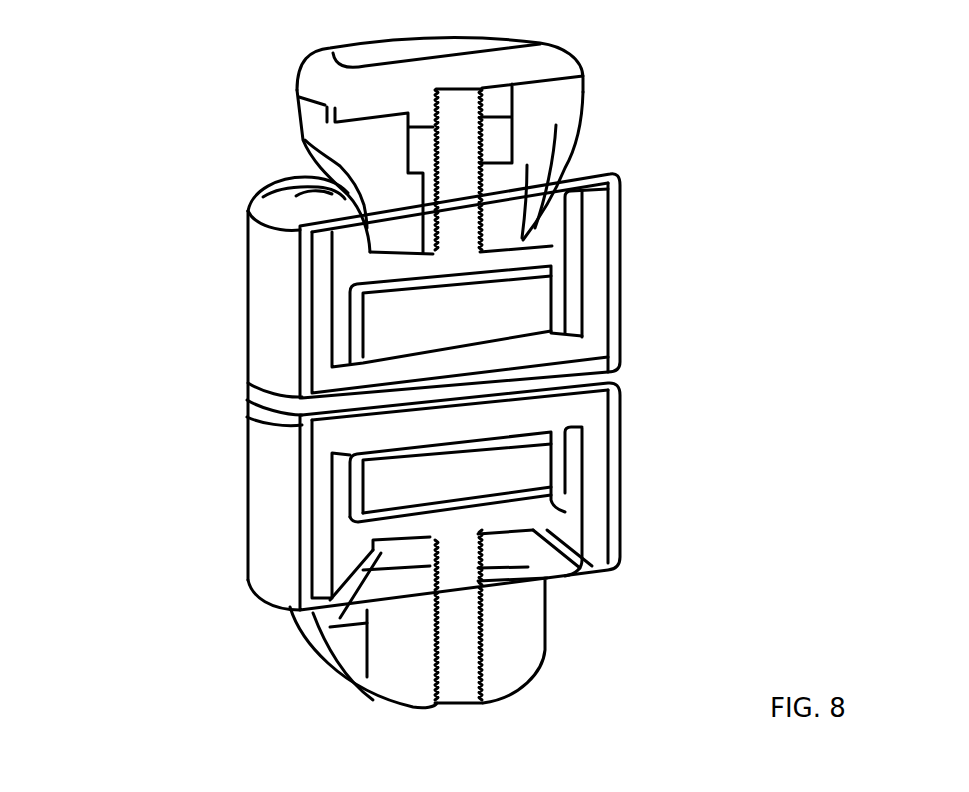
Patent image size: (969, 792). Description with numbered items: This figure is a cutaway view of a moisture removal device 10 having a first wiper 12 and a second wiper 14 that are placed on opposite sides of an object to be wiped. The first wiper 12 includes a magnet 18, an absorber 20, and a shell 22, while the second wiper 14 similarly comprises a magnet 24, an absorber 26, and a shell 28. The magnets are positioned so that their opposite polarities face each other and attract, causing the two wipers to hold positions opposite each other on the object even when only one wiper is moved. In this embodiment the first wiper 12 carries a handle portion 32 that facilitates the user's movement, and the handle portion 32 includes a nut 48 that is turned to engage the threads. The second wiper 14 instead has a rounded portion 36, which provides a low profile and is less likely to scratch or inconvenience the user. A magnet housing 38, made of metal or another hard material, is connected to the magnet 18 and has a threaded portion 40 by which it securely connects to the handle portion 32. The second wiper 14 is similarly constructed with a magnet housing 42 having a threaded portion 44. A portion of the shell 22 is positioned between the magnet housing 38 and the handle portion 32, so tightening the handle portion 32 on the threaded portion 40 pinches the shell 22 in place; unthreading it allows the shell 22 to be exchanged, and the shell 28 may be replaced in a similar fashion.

The moisture removal device 10 is at (194, 229).
The first wiper 12 is at (217, 315).
The second wiper 14 is at (213, 537).
The magnet 18 is at (510, 300).
The absorber 20 is at (593, 307).
The shell 22 is at (617, 343).
The magnet 24 is at (500, 475).
The absorber 26 is at (593, 440).
The shell 28 is at (613, 407).
The handle portion 32 is at (277, 67).
The rounded portion 36 is at (288, 712).
The magnet housing 38 is at (577, 280).
The threaded portion 40 is at (483, 197).
The magnet housing 42 is at (373, 535).
The threaded portion 44 is at (433, 647).
The nut 48 is at (493, 140).